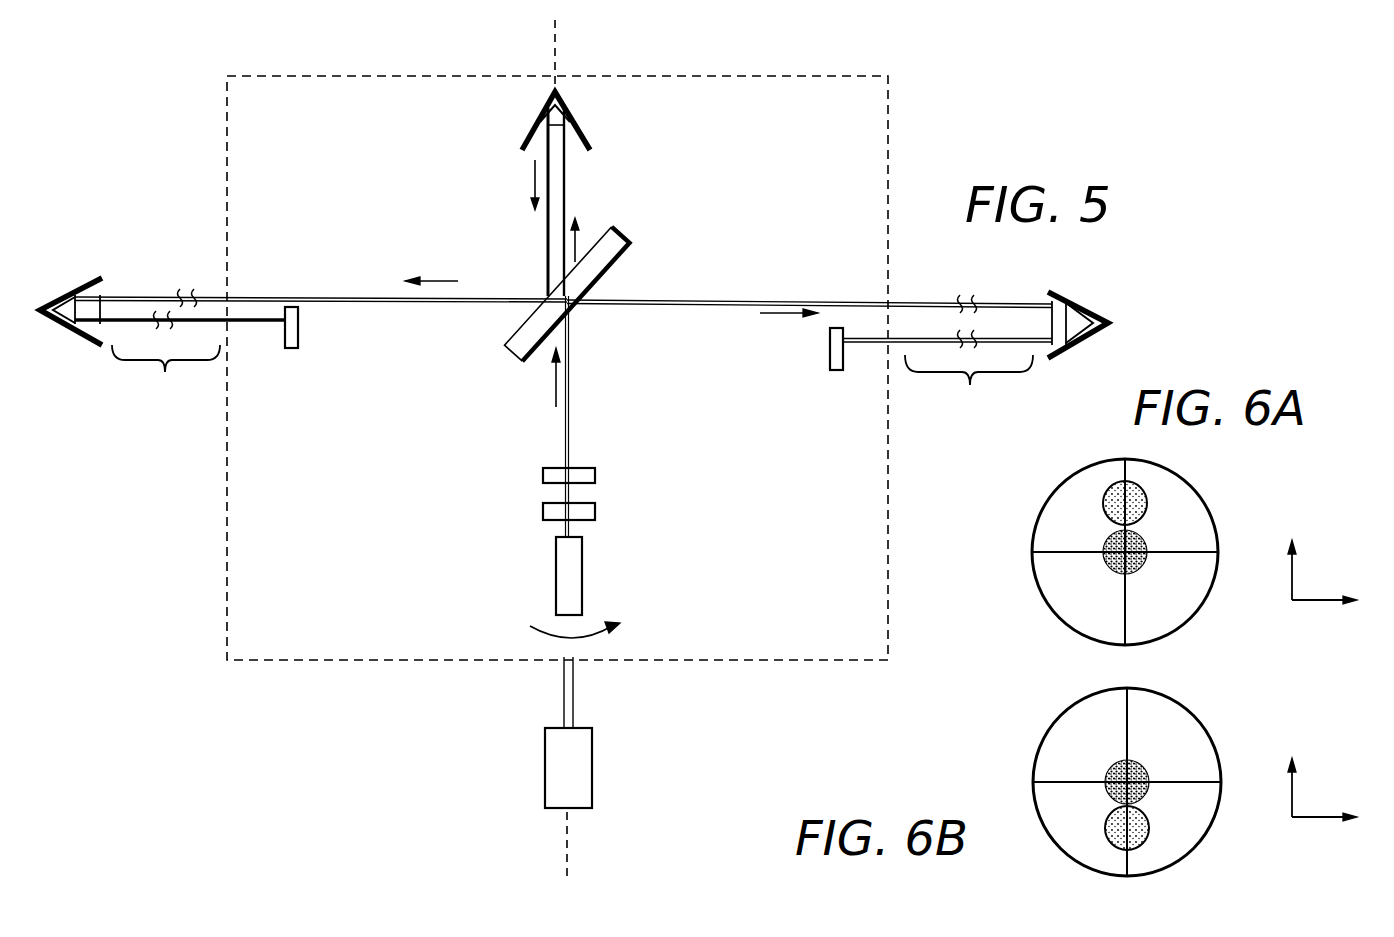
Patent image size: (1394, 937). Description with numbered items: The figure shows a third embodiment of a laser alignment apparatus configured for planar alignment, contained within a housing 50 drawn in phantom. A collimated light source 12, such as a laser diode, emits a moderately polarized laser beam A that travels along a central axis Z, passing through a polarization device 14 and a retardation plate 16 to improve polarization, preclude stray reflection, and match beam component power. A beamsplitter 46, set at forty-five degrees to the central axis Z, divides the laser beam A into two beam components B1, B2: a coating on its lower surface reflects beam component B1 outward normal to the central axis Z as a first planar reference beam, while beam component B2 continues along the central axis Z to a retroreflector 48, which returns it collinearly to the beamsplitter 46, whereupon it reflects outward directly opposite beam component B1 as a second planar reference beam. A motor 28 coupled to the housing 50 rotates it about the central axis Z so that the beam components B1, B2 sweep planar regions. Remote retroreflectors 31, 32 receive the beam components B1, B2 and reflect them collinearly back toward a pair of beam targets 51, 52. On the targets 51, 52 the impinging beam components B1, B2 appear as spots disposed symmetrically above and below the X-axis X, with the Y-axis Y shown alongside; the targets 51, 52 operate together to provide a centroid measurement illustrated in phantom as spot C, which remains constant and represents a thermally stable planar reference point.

In FIG. 5, the collimated light source 12 is at (560, 562).
In FIG. 5, the polarization device 14 is at (552, 512).
In FIG. 5, the retardation plate 16 is at (580, 475).
In FIG. 5, the motor 28 is at (545, 775).
In FIG. 5, the retroreflector 31 is at (1075, 302).
In FIG. 5, the retroreflector 32 is at (85, 285).
In FIG. 5, the beamsplitter 46 is at (512, 345).
In FIG. 5, the retroreflector 48 is at (538, 120).
In FIG. 5, the housing 50 is at (895, 144).
In FIG. 5, the beam target 51 is at (835, 372).
In FIG. 6A, the beam target 51 is at (1033, 588).
In FIG. 5, the beam target 52 is at (291, 350).
In FIG. 6B, the beam target 52 is at (1200, 832).
In FIG. 5, the laser beam A is at (570, 388).
In FIG. 5, the beam component B1 is at (727, 305).
In FIG. 6A, the beam component B1 is at (1100, 505).
In FIG. 5, the beam component B2 is at (567, 200).
In FIG. 6B, the beam component B2 is at (1102, 828).
In FIG. 6A, the spot C is at (1145, 548).
In FIG. 6B, the spot C is at (1148, 778).
In FIG. 5, the central axis Z is at (555, 63).
In FIG. 6A, the X-axis X is at (1335, 602).
In FIG. 6B, the X-axis X is at (1335, 819).
In FIG. 6A, the Y-axis Y is at (1292, 557).
In FIG. 6B, the Y-axis Y is at (1292, 775).